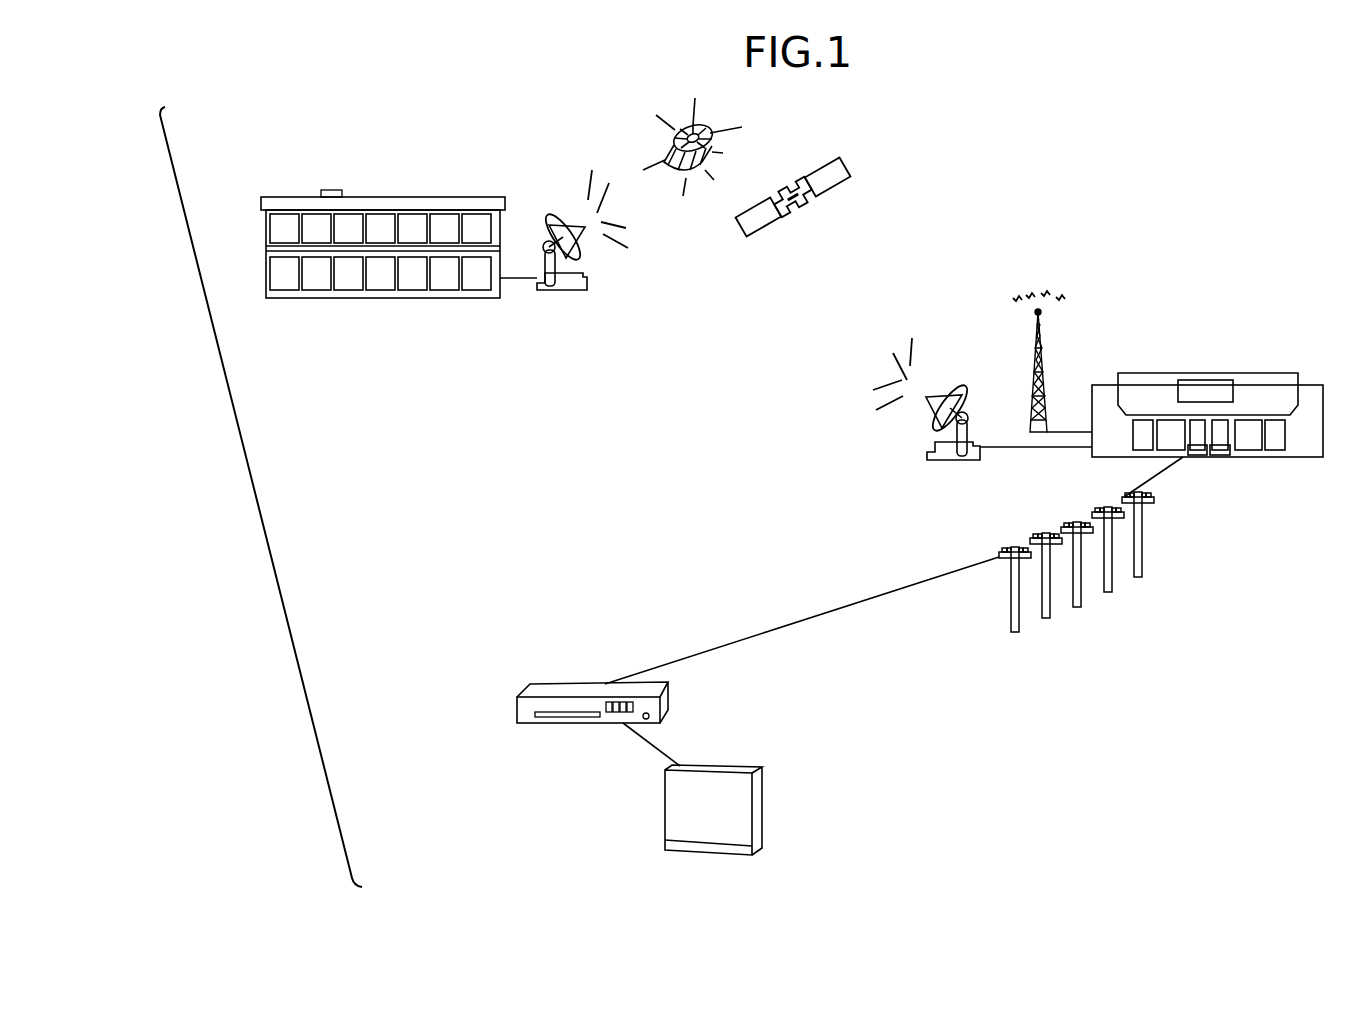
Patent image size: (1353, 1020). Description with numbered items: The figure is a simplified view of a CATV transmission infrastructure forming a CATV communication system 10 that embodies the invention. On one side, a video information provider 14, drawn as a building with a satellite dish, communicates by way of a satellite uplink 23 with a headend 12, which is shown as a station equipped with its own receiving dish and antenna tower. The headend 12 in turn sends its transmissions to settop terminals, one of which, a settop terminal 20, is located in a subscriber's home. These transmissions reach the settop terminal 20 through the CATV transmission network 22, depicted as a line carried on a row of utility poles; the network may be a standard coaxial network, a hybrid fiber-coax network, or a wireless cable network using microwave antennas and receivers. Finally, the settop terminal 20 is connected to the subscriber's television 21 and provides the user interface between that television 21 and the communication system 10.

The CATV communication system 10 is at (1158, 226).
The headend 12 is at (1262, 373).
The video information provider 14 is at (290, 197).
The settop terminal 20 is at (540, 685).
The television 21 is at (758, 808).
The CATV transmission network 22 is at (883, 588).
The satellite uplink 23 is at (795, 180).